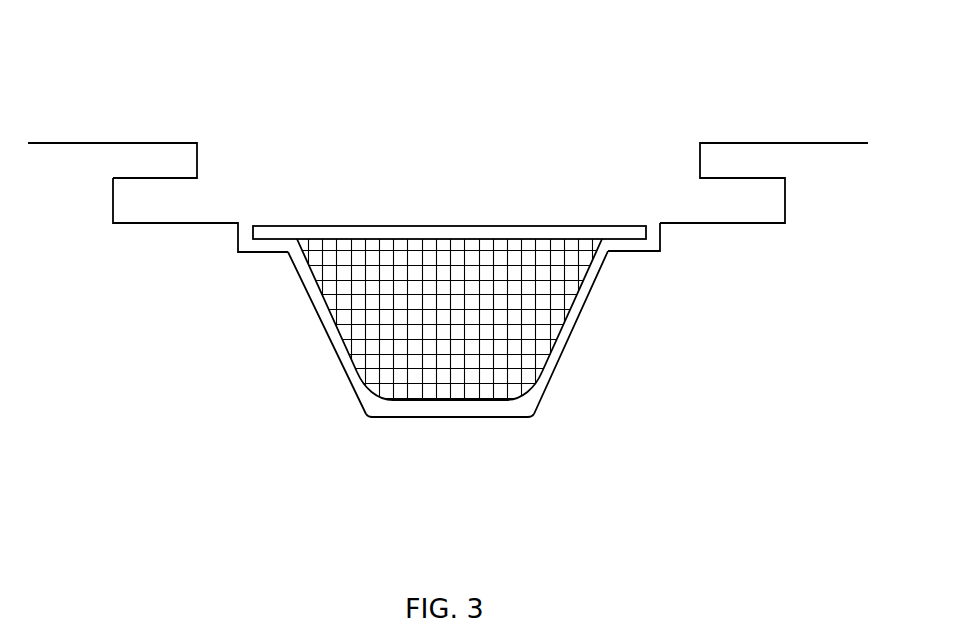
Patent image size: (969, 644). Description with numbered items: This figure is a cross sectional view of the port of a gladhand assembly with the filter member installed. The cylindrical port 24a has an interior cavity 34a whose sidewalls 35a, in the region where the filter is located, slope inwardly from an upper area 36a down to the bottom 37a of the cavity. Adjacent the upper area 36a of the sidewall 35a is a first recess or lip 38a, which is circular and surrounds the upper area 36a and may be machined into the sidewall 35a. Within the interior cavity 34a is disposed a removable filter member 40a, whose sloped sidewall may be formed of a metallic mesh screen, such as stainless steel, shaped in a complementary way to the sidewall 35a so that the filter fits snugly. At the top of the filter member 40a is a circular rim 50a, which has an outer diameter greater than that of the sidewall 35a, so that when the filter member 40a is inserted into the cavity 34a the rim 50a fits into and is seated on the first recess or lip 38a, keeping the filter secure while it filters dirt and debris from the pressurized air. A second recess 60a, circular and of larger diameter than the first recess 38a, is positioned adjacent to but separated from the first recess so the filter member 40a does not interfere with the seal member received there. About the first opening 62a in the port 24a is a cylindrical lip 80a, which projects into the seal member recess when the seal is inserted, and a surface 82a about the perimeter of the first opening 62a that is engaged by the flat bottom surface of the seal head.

The first opening 62a is at (510, 76).
The cylindrical port 24a is at (757, 147).
The cylindrical lip 80a is at (168, 157).
The surface about the perimeter of the first opening 82a is at (187, 143).
The second recess 60a is at (117, 198).
The circular rim 50a is at (267, 231).
The first recess or lip 38a is at (660, 243).
The upper area 36a is at (600, 282).
The sidewall 35a is at (562, 355).
The bottom 37a is at (535, 409).
The removable filter member 40a is at (357, 332).
The interior cavity 34a is at (352, 408).